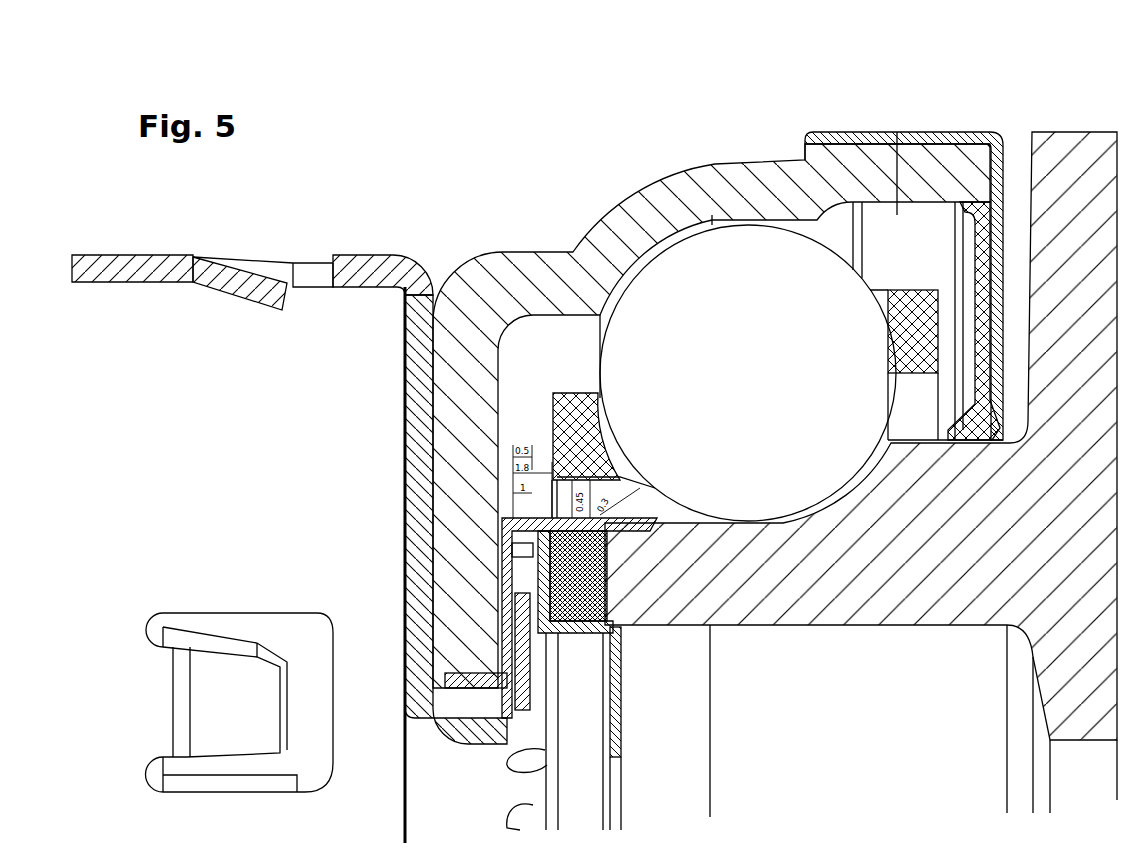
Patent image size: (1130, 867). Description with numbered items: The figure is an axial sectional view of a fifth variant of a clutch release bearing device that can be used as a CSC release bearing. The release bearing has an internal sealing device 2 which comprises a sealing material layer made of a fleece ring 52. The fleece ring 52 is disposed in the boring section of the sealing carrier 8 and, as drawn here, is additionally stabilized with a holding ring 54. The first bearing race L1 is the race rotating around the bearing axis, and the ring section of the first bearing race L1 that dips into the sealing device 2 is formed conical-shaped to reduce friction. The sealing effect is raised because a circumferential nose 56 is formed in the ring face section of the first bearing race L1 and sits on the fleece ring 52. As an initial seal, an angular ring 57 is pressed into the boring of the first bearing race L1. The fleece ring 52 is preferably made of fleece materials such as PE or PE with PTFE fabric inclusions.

The sealing device 2 is at (396, 467).
The sealing carrier 8 is at (395, 566).
The fleece ring 52 is at (502, 554).
The holding ring 54 is at (536, 606).
The circumferential nose 56 is at (616, 577).
The angular ring 57 is at (618, 700).
The first bearing race L1 is at (776, 604).